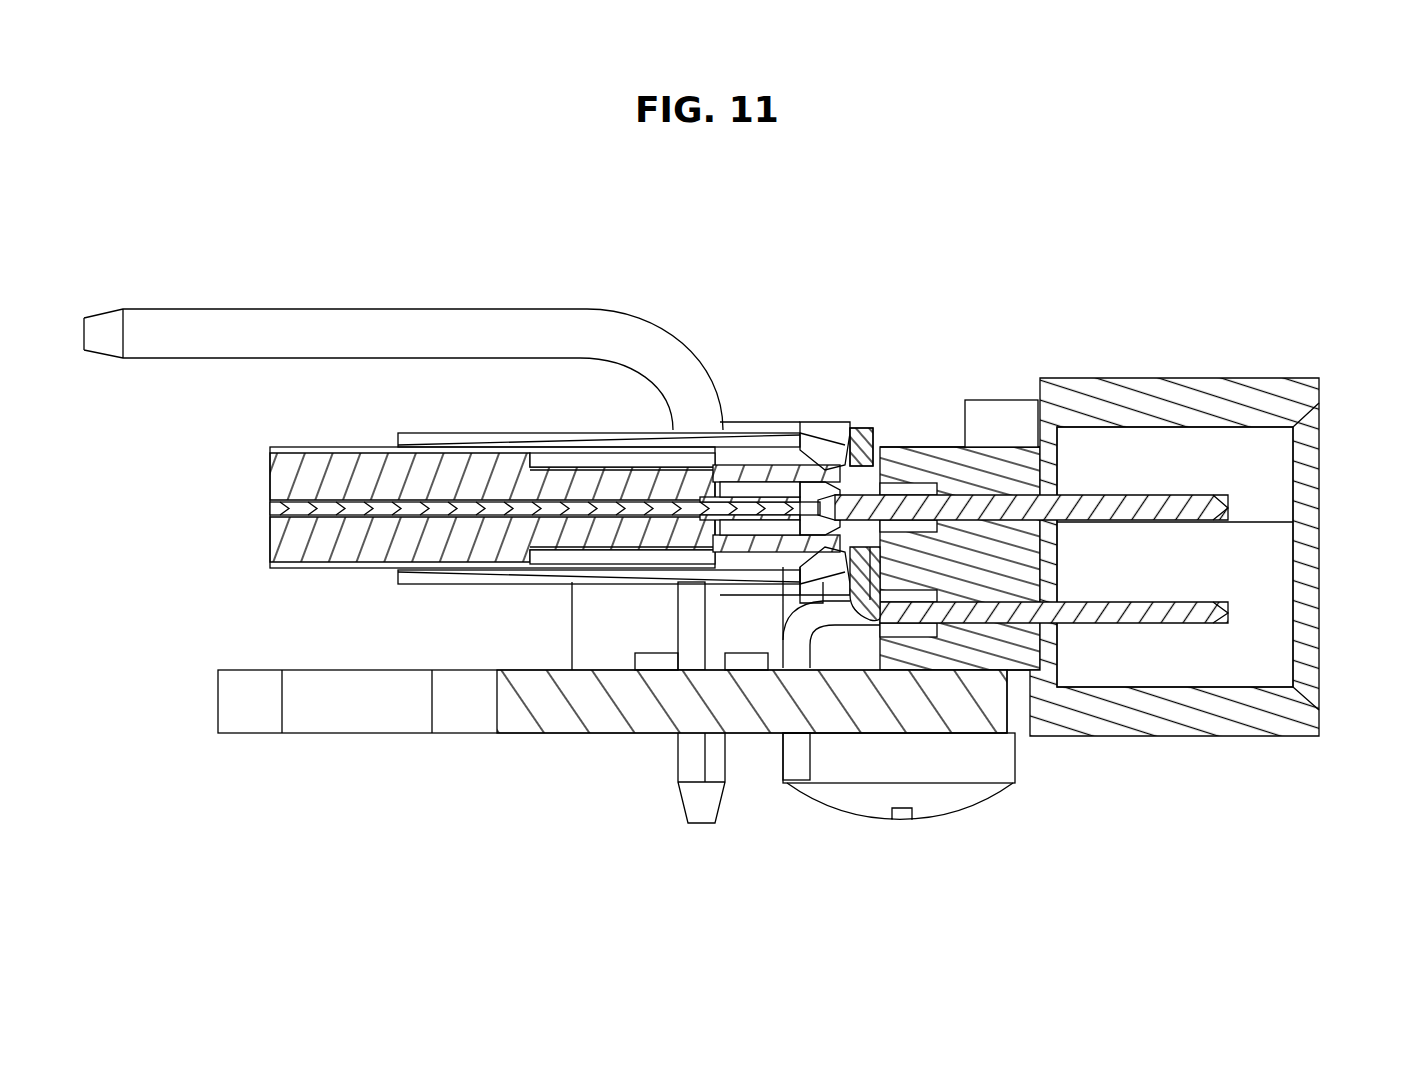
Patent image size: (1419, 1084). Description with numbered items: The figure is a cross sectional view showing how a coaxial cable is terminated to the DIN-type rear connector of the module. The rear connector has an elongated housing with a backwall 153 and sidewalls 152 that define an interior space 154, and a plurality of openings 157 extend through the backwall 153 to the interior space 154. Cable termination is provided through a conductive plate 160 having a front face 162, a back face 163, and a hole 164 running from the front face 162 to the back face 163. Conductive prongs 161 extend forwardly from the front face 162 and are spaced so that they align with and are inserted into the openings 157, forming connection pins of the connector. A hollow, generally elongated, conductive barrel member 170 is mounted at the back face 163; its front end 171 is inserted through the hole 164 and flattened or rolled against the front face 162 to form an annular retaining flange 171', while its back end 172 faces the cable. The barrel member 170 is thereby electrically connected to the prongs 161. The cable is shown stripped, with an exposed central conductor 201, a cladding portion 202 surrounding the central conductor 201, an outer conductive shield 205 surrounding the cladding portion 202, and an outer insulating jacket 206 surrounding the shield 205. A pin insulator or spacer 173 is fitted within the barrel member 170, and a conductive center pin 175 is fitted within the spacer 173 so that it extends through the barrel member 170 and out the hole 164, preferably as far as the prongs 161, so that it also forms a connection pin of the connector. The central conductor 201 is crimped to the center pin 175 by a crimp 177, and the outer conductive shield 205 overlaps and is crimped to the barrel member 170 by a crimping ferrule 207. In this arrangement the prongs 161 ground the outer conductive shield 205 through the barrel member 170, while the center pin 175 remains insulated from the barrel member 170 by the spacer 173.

The sidewalls 152 is at (1277, 737).
The backwall 153 is at (1030, 560).
The interior space 154 is at (1260, 653).
The openings 157 is at (1003, 480).
The conductive plate 160 is at (860, 552).
The conductive prongs 161 is at (1177, 613).
The front face 162 is at (878, 463).
The back face 163 is at (842, 440).
The hole 164 is at (866, 550).
The barrel member 170 is at (827, 430).
The front end 171 is at (921, 440).
The annular retaining flange 171' is at (974, 473).
The back end 172 is at (545, 462).
The pin insulator or spacer 173 is at (797, 473).
The conductive center pin 175 is at (1213, 505).
The crimp 177 is at (757, 490).
The central conductor 201 is at (783, 505).
The cladding portion 202 is at (575, 528).
The outer conductive shield 205 is at (655, 453).
The outer insulating jacket 206 is at (297, 450).
The crimping ferrule 207 is at (603, 438).